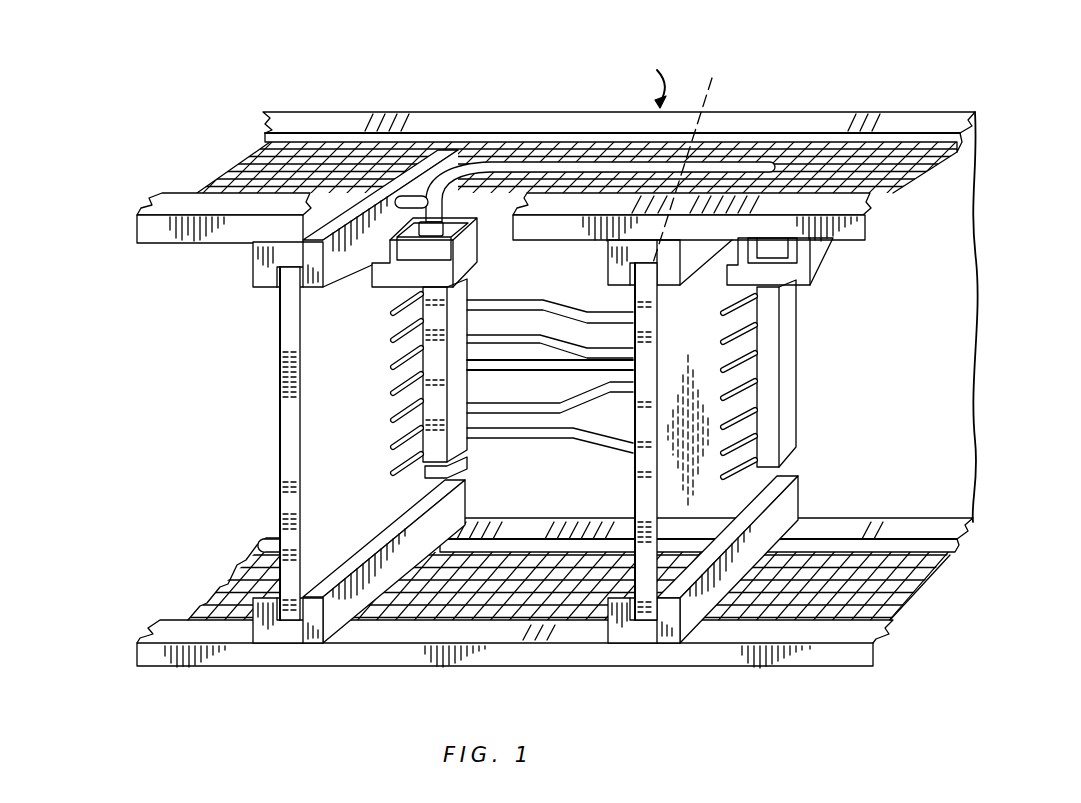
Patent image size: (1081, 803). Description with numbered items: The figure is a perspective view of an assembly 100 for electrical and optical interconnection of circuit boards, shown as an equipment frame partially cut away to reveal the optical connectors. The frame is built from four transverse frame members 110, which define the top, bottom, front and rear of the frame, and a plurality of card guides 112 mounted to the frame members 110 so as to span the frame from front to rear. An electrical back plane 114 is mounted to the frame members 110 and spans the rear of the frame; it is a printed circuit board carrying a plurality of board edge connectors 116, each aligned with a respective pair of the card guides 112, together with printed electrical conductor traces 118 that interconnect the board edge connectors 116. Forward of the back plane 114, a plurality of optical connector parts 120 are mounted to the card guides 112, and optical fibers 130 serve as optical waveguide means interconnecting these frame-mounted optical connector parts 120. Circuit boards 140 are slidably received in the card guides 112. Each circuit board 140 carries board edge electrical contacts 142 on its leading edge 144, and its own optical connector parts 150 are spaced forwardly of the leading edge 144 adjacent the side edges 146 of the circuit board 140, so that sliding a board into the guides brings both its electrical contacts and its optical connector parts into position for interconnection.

The assembly 100 is at (641, 81).
The transverse frame members 110 is at (753, 112).
The card guides 112 is at (263, 260).
The electrical back plane 114 is at (970, 317).
The board edge connectors 116 is at (458, 442).
The printed electrical conductor traces 118 is at (522, 300).
The optical connector parts 120 is at (417, 253).
The optical fibers 130 is at (538, 167).
The circuit boards 140 is at (288, 477).
The board edge electrical contacts 142 is at (392, 474).
The leading edges 144 is at (443, 468).
The side edges 146 is at (692, 159).
The optical connector parts 150 is at (480, 250).